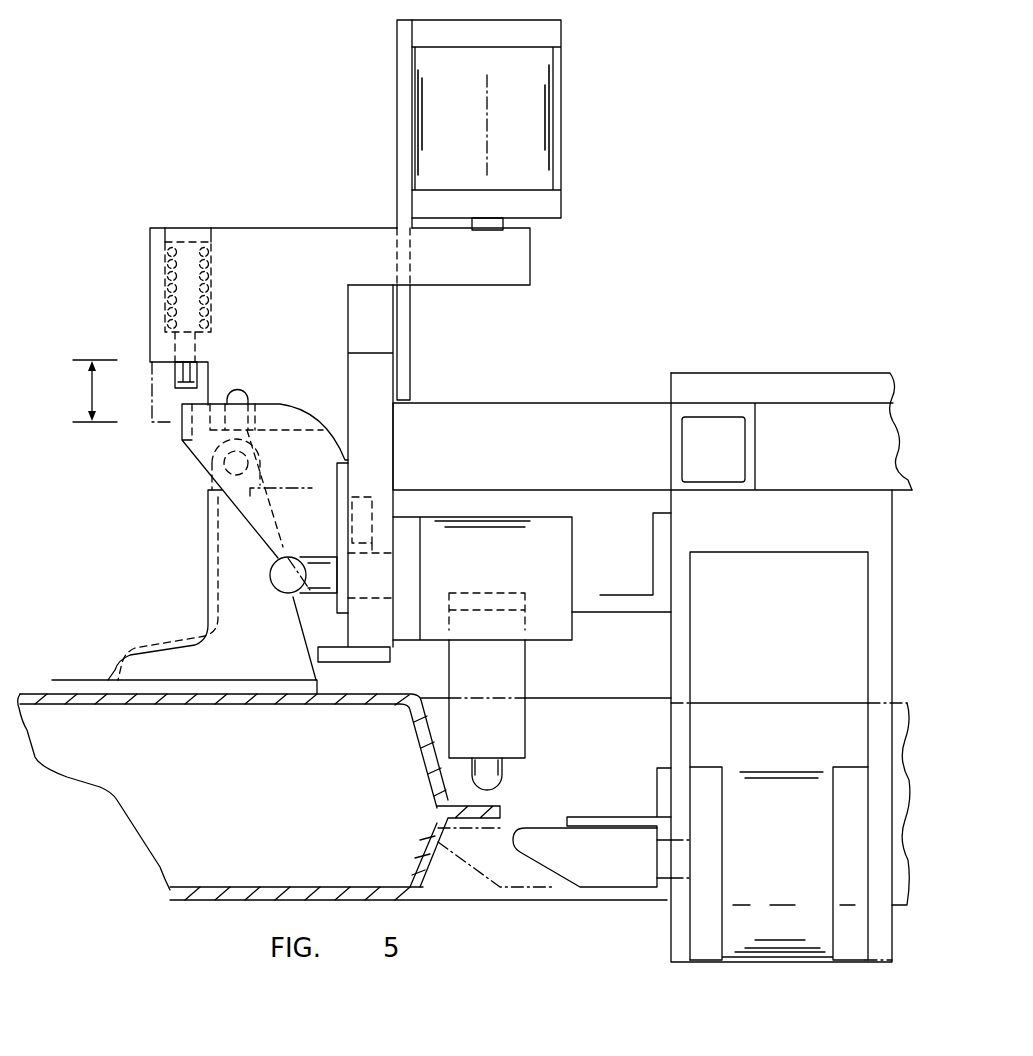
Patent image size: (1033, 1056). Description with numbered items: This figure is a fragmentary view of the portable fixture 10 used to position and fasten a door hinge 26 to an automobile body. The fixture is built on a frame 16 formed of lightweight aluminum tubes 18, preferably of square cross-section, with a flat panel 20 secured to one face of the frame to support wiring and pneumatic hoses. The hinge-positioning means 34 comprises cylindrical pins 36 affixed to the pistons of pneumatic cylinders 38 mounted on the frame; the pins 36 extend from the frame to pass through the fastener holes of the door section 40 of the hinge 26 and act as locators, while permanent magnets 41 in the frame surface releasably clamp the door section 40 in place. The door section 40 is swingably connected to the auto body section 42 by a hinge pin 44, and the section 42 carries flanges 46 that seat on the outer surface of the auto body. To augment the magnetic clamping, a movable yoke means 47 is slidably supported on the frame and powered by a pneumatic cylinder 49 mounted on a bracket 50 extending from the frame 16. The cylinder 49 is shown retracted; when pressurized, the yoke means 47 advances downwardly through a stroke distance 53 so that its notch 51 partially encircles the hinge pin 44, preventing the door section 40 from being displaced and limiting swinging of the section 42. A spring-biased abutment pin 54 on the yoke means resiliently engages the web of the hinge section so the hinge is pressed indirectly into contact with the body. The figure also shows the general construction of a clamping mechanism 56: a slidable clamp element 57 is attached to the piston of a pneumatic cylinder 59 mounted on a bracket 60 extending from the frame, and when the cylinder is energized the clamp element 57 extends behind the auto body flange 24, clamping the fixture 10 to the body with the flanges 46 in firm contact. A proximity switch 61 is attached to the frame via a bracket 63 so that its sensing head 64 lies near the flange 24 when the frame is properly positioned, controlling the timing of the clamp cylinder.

The portable fixture 10 is at (683, 362).
The frame 16 is at (582, 403).
The aluminum tubes 18 is at (712, 408).
The flat panel 20 is at (825, 373).
The auto body flange 24 is at (510, 812).
The hinge 26 is at (186, 456).
The hinge-positioning means 34 is at (420, 385).
The cylindrical pins 36 is at (285, 595).
The pneumatic cylinders 38 is at (487, 517).
The door section 40 is at (253, 535).
The permanent magnets 41 is at (366, 497).
The auto body section 42 is at (200, 597).
The hinge pin 44 is at (245, 440).
The flanges 46 is at (233, 694).
The yoke means 47 is at (304, 242).
The pneumatic cylinder 49 is at (563, 143).
The bracket 50 is at (397, 133).
The notch 51 is at (238, 388).
The stroke distance 53 is at (80, 396).
The spring-biased abutment pin 54 is at (175, 378).
The clamping mechanism 56 is at (668, 950).
The clamp element 57 is at (583, 890).
The pneumatic cylinder 59 is at (760, 957).
The bracket 60 is at (693, 635).
The proximity switch 61 is at (527, 665).
The bracket 63 is at (598, 598).
The sensing head 64 is at (503, 781).